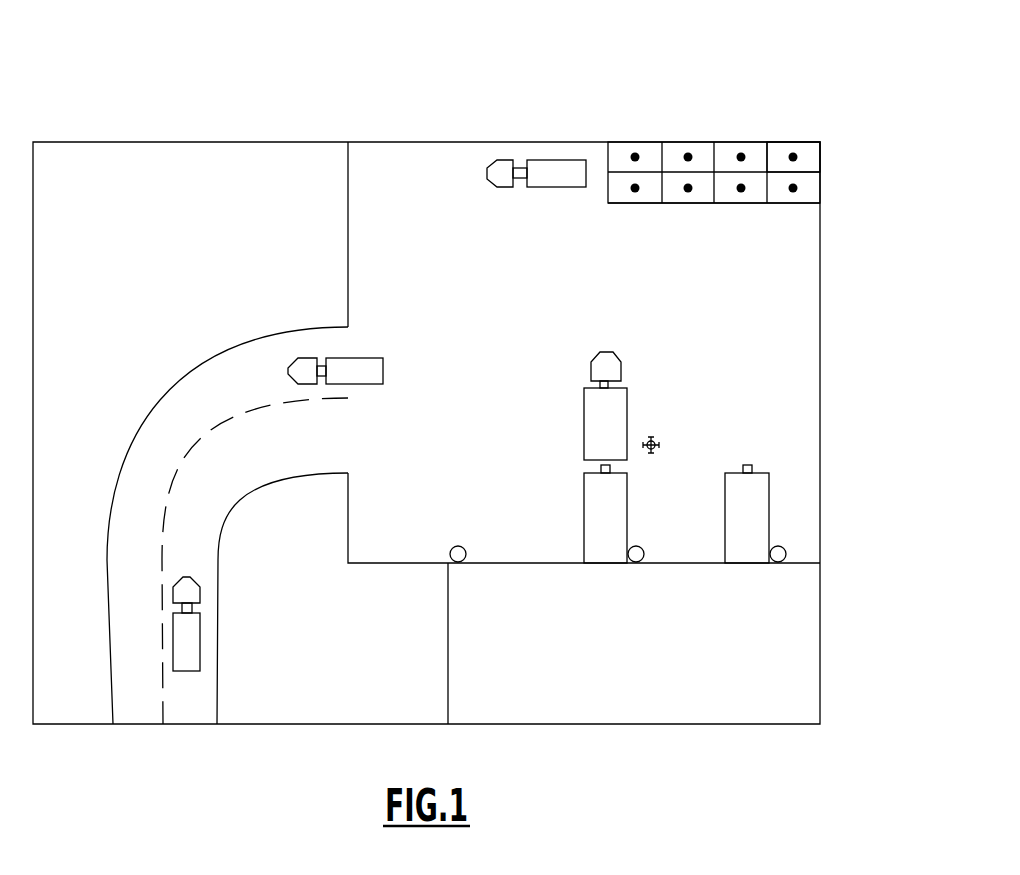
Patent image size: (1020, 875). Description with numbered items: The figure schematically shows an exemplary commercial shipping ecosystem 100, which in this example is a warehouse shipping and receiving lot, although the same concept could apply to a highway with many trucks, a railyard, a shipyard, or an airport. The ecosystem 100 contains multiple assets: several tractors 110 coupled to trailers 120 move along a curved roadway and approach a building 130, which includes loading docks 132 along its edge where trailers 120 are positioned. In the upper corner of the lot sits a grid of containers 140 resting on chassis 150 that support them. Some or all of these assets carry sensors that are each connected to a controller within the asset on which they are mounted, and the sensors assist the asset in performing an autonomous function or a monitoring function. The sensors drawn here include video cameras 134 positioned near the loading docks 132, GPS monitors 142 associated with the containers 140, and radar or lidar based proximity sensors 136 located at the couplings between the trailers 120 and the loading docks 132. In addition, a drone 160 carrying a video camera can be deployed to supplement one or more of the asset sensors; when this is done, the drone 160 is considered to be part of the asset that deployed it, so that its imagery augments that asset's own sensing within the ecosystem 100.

The commercial shipping ecosystem 100 is at (274, 66).
The tractor 110 is at (502, 188).
The trailer 120 is at (563, 160).
The building 130 is at (657, 658).
The loading dock 132 is at (592, 521).
The video camera 134 is at (453, 547).
The radar or lidar based proximity sensor 136 is at (605, 465).
The container 140 is at (672, 152).
The GPS monitor 142 is at (797, 152).
The chassis 150 is at (795, 203).
The drone 160 is at (657, 448).